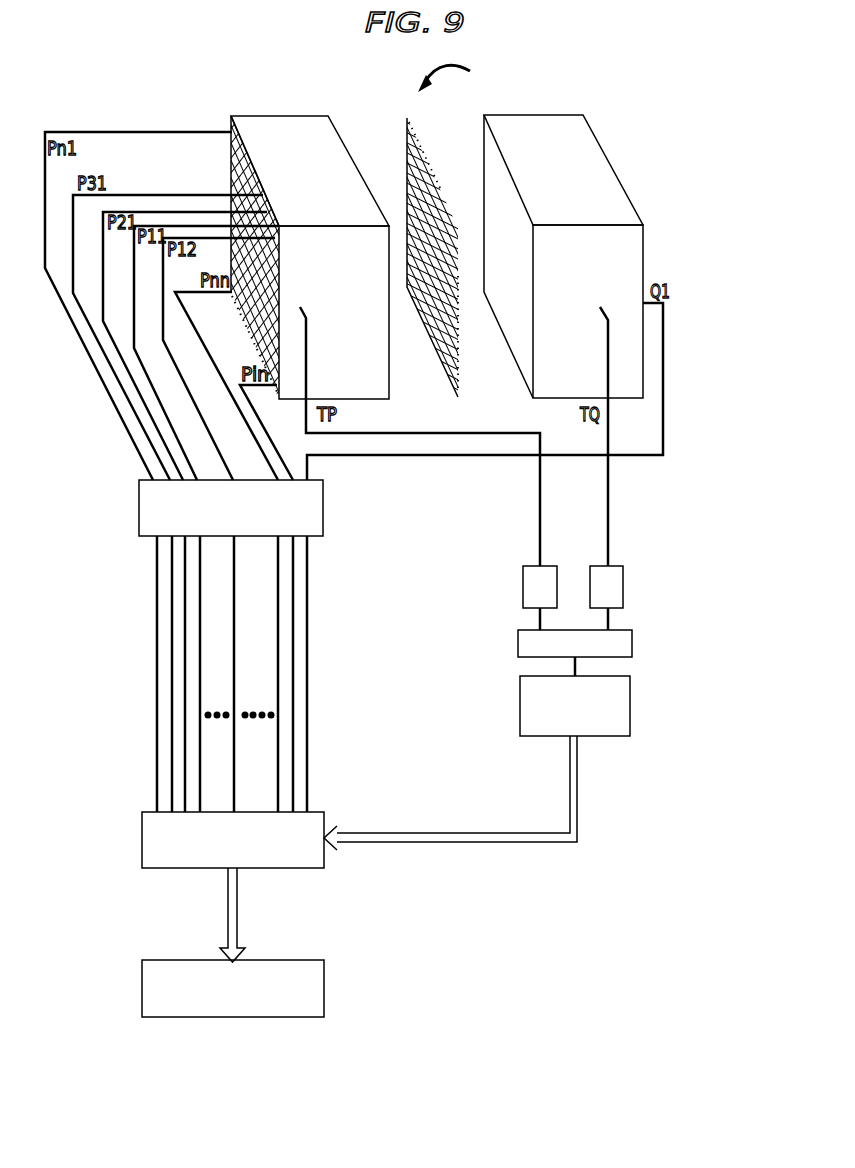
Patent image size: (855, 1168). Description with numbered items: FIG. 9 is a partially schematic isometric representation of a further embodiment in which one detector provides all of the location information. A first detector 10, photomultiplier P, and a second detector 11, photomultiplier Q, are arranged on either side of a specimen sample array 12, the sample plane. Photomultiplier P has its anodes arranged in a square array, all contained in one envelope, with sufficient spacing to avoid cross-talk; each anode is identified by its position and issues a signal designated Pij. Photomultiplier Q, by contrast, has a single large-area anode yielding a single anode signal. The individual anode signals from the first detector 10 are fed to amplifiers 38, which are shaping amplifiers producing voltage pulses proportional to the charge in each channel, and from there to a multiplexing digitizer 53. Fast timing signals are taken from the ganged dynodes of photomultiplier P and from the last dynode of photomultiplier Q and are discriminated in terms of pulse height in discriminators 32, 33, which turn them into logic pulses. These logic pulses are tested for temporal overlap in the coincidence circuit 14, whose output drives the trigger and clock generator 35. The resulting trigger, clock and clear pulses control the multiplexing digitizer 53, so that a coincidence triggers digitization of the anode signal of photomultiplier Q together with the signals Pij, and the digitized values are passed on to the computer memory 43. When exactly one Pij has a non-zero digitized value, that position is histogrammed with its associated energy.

The first detector 10 is at (262, 125).
The second detector 11 is at (575, 130).
The specimen sample array 12 is at (407, 147).
The coincidence circuit 14 is at (533, 630).
The discriminator 32 is at (523, 572).
The discriminator 33 is at (623, 580).
The trigger and clock generator 35 is at (593, 737).
The amplifiers 38 is at (139, 500).
The computer memory 43 is at (142, 975).
The multiplexing digitizer 53 is at (142, 828).